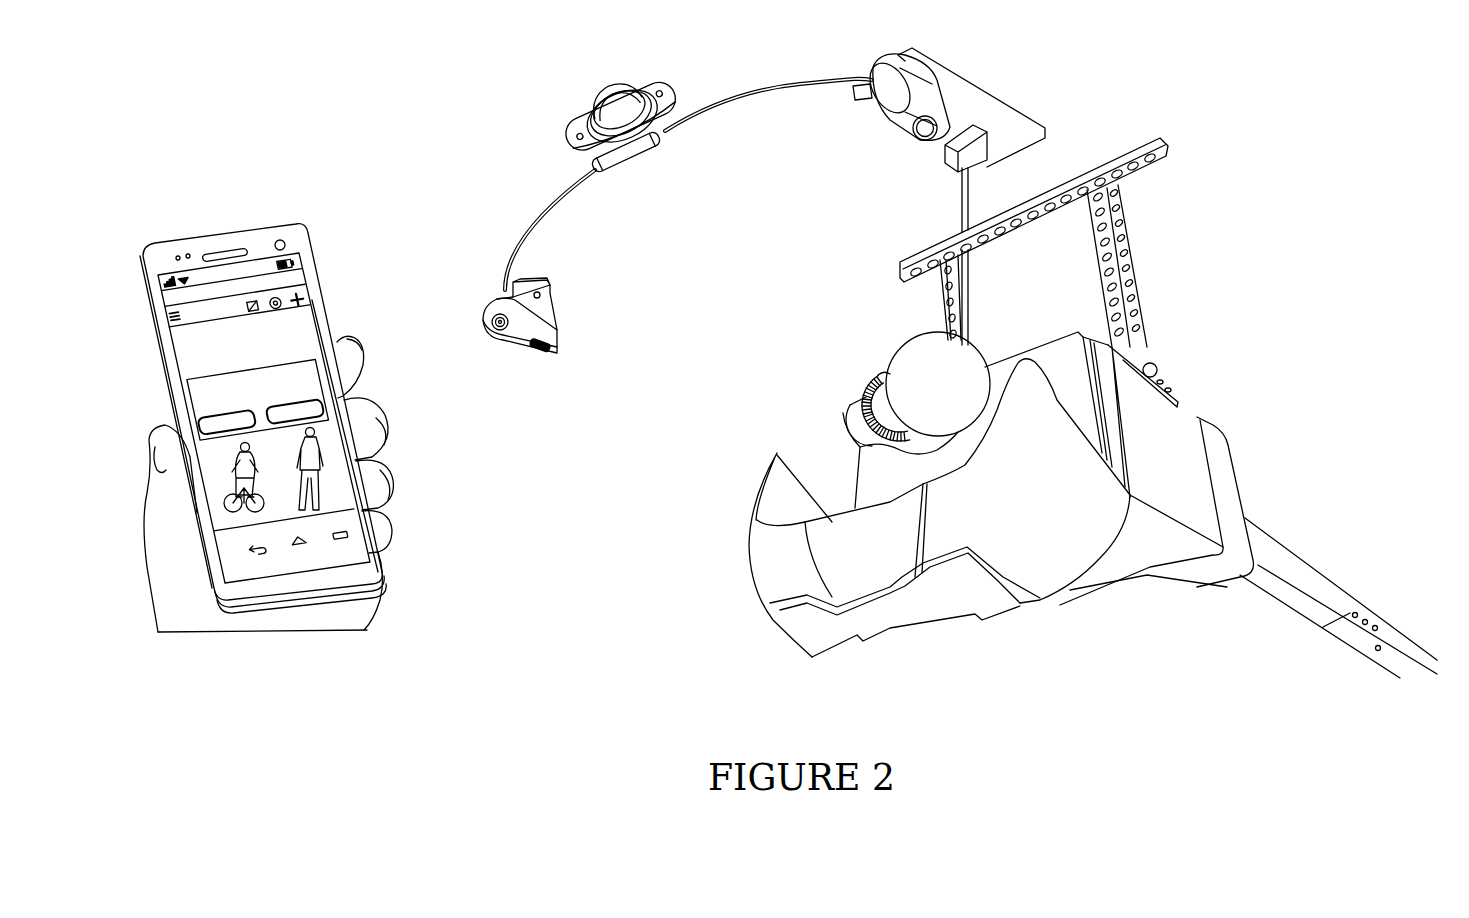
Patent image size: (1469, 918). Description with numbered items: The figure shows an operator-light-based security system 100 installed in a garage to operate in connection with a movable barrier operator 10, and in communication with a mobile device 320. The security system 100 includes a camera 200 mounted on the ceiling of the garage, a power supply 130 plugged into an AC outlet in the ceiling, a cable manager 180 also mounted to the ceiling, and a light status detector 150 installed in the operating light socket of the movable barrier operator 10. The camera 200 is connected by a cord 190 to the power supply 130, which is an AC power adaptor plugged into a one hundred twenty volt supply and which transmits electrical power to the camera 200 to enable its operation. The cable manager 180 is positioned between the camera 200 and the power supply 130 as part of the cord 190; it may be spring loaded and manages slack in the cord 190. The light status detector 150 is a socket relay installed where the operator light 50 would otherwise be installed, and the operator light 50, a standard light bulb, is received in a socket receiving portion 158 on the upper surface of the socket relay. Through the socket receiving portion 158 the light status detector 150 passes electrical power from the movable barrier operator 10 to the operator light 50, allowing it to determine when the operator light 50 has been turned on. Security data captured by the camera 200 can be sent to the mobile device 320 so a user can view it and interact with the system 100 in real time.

The movable barrier operator 10 is at (1203, 410).
The operator light 50 is at (893, 343).
The security system 100 is at (1233, 132).
The power supply 130 is at (928, 63).
The light status detector 150 is at (867, 387).
The socket receiving portion 158 is at (850, 432).
The cable manager 180 is at (603, 107).
The cord 190 is at (523, 232).
The camera 200 is at (507, 345).
The mobile device 320 is at (213, 233).